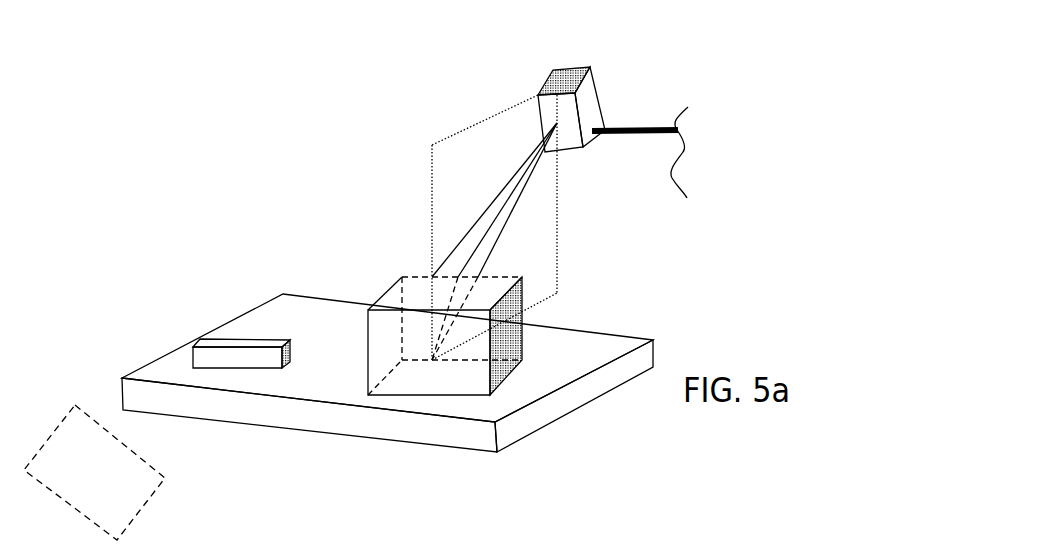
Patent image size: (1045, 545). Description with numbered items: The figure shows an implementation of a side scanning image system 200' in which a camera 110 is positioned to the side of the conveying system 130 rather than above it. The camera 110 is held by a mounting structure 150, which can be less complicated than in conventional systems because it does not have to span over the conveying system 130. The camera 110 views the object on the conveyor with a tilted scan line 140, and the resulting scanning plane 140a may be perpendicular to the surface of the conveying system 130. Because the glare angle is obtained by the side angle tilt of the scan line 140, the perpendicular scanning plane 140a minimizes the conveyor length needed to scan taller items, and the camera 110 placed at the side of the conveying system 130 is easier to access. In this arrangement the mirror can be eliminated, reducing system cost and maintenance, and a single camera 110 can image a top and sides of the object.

The camera 110 is at (565, 152).
The conveying system 130 is at (320, 422).
The tilted scan line 140 is at (463, 233).
The scanning plane 140a is at (557, 293).
The mounting structure 150 is at (659, 128).
The side scanning image system 200' is at (94, 324).